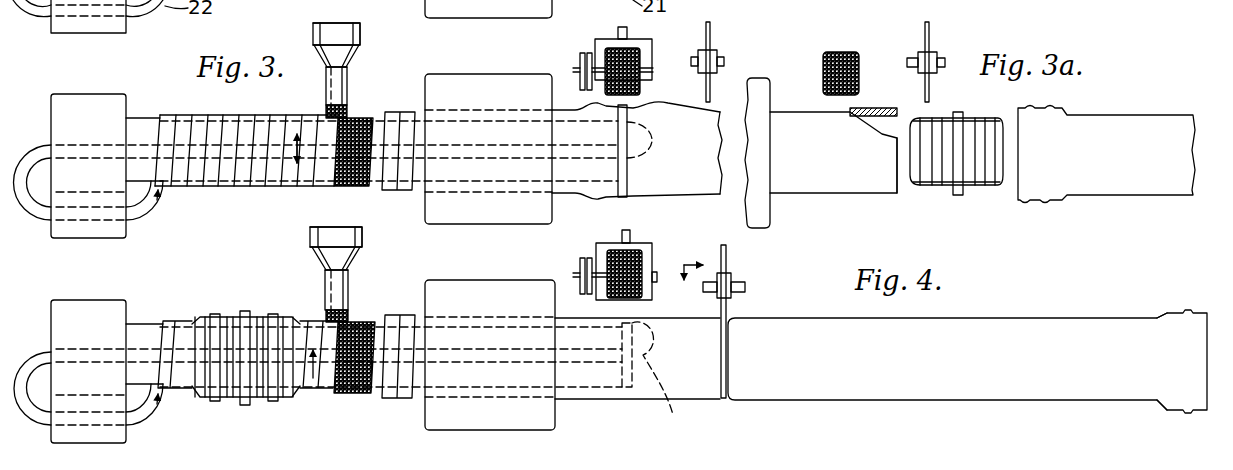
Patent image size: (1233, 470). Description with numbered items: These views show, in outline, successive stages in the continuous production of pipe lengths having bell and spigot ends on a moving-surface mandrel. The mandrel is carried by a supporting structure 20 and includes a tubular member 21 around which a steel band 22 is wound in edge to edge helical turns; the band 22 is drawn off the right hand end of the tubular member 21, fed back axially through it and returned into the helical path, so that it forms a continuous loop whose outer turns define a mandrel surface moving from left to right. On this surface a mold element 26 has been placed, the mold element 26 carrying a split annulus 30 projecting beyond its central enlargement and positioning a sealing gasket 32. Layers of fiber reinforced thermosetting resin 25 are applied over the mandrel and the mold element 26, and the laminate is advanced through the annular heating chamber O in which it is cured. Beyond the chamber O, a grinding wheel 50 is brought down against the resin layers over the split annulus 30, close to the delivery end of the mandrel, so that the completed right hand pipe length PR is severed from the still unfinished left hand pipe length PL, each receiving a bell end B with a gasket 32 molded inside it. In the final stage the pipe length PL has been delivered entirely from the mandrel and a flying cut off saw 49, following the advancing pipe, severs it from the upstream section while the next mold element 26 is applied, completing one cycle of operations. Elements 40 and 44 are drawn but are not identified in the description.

In FIG. 3, the standard or supporting structure 20 is at (99, 82).
In FIG. 4, the standard or supporting structure 20 is at (106, 300).
In FIG. 3, the tubular member 21 is at (140, 118).
In FIG. 4, the tubular member 21 is at (627, 400).
In FIG. 3, the steel band 22 is at (233, 187).
In FIG. 4, the steel band 22 is at (160, 415).
In FIG. 3, the layers of fiber reinforced thermosetting resin material 25 is at (416, 112).
In FIG. 4, the layers of fiber reinforced thermosetting resin material 25 is at (416, 315).
In FIG. 3A, the mold element 26 is at (971, 198).
In FIG. 4, the mold element 26 is at (266, 312).
In FIG. 3A, the split annulus or ring 30 is at (958, 196).
In FIG. 4, the split annulus or ring 30 is at (245, 311).
In FIG. 3A, the sealing gasket 32 is at (880, 108).
In FIG. 3, the funnel 40 is at (314, 27).
In FIG. 4, the funnel 40 is at (312, 242).
In FIG. 3, the funnel cap 44 is at (360, 35).
In FIG. 4, the funnel cap 44 is at (362, 242).
In FIG. 3, the cut off saw 49 is at (710, 30).
In FIG. 3A, the cut off saw 49 is at (930, 30).
In FIG. 4, the cut off saw 49 is at (727, 259).
In FIG. 3, the grinding wheel 50 is at (612, 50).
In FIG. 3A, the grinding wheel 50 is at (845, 52).
In FIG. 4, the grinding wheel 50 is at (606, 256).
In FIG. 3, the annular heating chamber O is at (505, 74).
In FIG. 3A, the annular heating chamber O is at (762, 215).
In FIG. 4, the annular heating chamber O is at (505, 280).
In FIG. 3A, the left hand pipe length PL is at (822, 196).
In FIG. 4, the left hand pipe length PL is at (903, 402).
In FIG. 3A, the bell end B is at (876, 196).
In FIG. 4, the bell end B is at (1175, 413).
In FIG. 3A, the right hand pipe length PR is at (1120, 115).